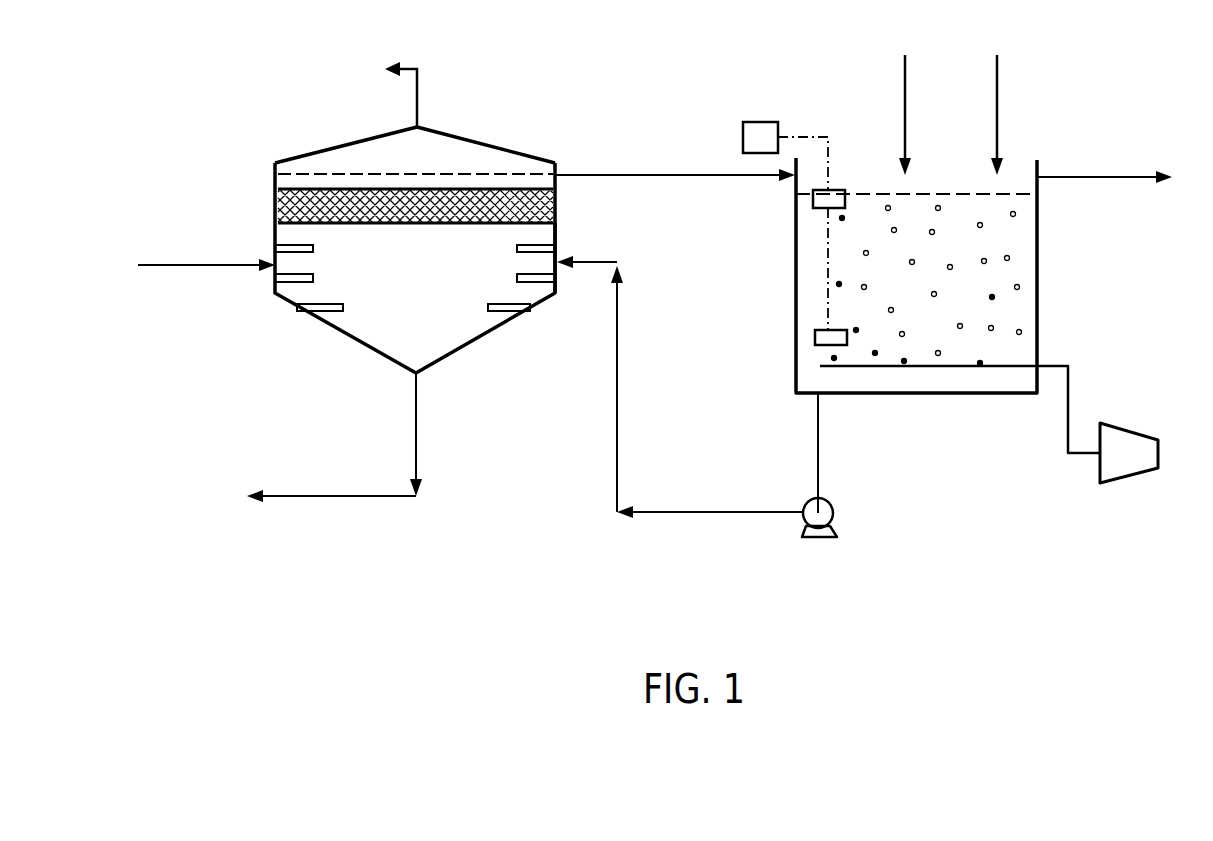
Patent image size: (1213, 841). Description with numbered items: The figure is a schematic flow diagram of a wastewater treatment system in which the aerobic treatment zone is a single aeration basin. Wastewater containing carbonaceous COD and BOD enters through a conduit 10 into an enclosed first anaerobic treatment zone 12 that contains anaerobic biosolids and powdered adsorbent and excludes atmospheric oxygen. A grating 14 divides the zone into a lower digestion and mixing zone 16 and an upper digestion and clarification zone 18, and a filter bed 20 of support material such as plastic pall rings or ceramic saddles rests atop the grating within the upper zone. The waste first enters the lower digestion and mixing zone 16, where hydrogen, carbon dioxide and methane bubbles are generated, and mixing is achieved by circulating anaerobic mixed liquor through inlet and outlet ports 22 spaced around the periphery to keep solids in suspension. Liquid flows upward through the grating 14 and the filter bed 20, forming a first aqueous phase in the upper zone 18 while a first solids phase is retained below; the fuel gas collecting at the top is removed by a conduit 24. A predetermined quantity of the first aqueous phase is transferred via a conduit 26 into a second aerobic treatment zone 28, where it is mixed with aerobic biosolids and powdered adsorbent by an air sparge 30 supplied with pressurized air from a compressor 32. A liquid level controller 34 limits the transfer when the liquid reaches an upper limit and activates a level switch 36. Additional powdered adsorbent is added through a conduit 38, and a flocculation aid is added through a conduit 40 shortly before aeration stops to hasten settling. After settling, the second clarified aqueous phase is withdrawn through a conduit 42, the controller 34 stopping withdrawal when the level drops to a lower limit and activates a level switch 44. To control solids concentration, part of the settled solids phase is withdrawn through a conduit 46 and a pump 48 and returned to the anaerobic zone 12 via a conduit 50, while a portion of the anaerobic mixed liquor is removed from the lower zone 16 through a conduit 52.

The conduit 10 is at (168, 265).
The first anaerobic treatment zone 12 is at (325, 150).
The grating 14 is at (552, 226).
The lower digestion and mixing zone 16 is at (437, 286).
The upper digestion and clarification zone 18 is at (437, 184).
The filter bed 20 is at (550, 208).
The inlet and outlet ports 22 is at (300, 253).
The conduit 24 is at (417, 100).
The conduit 26 is at (683, 172).
The second aerobic treatment zone 28 is at (795, 272).
The air sparge 30 is at (943, 366).
The compressor 32 is at (1133, 432).
The liquid level controller 34 is at (760, 122).
The level switch 36 is at (835, 190).
The conduit 38 is at (997, 100).
The conduit 40 is at (905, 100).
The conduit 42 is at (1098, 178).
The level switch 44 is at (815, 334).
The conduit 46 is at (818, 450).
The pump 48 is at (833, 506).
The conduit 50 is at (617, 450).
The conduit 52 is at (418, 443).